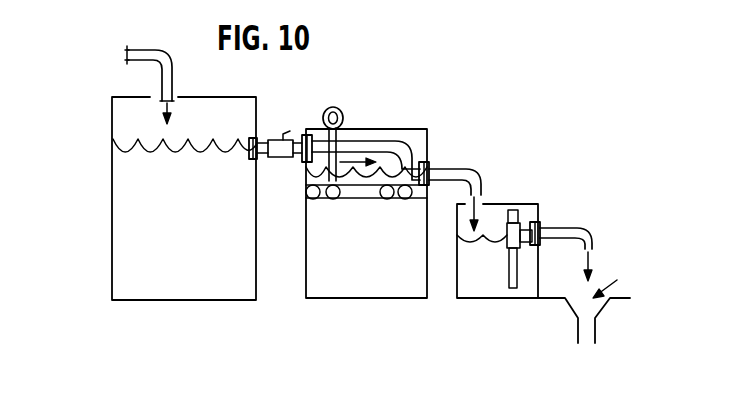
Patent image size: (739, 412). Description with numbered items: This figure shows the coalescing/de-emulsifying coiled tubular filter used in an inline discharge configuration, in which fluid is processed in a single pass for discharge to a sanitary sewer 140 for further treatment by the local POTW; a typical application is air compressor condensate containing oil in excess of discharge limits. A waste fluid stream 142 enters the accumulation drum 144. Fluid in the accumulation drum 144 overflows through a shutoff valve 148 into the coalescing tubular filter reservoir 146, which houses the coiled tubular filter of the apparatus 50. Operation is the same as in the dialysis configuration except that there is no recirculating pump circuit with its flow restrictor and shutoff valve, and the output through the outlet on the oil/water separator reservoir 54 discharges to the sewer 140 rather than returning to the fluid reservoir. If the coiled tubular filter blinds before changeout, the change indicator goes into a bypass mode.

The waste fluid stream 142 is at (151, 48).
The accumulation drum 144 is at (128, 208).
The shutoff valve 148 is at (279, 138).
The pump apparatus 50 is at (359, 108).
The coalescing tubular filter reservoir 146 is at (330, 287).
The oil/water separator reservoir 54 is at (482, 280).
The sanitary sewer 140 is at (587, 343).